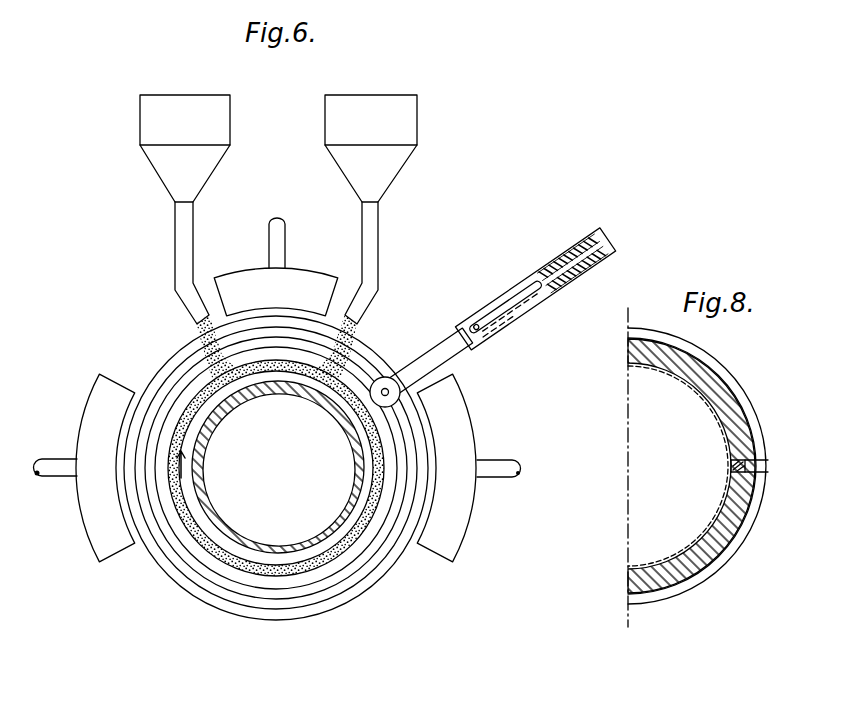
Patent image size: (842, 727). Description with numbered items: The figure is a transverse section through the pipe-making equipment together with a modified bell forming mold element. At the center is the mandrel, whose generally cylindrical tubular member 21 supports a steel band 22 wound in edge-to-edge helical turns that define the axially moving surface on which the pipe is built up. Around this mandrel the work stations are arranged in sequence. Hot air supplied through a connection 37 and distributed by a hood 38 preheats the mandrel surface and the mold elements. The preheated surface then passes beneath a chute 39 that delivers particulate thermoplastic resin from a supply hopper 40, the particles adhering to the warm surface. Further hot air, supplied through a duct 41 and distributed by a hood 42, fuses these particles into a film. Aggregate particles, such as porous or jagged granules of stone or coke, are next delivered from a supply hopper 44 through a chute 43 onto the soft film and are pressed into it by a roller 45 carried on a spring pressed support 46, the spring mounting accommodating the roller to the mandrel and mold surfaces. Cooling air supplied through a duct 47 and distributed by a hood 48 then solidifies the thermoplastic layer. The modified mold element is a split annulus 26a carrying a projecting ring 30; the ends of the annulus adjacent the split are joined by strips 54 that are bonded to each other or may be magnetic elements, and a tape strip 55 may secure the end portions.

In FIG. 6, the tubular member 21 is at (328, 542).
In FIG. 6, the steel band 22 is at (302, 565).
In FIG. 8, the steel band 22 is at (655, 373).
In FIG. 8, the split annulus 26a is at (703, 378).
In FIG. 8, the split annulus or ring 30 is at (757, 419).
In FIG. 6, the connection 37 is at (57, 470).
In FIG. 6, the hood 38 is at (92, 544).
In FIG. 6, the chute 39 is at (174, 233).
In FIG. 6, the supply hopper 40 is at (140, 108).
In FIG. 6, the duct 41 is at (285, 232).
In FIG. 6, the hood 42 is at (240, 271).
In FIG. 6, the chute 43 is at (378, 243).
In FIG. 6, the supply hopper 44 is at (417, 104).
In FIG. 6, the roller 45 is at (385, 377).
In FIG. 6, the spring pressed support 46 is at (455, 340).
In FIG. 6, the duct 47 is at (496, 460).
In FIG. 6, the hood 48 is at (462, 545).
In FIG. 8, the strips 54 is at (758, 448).
In FIG. 8, the adhesive tape strip 55 is at (748, 487).